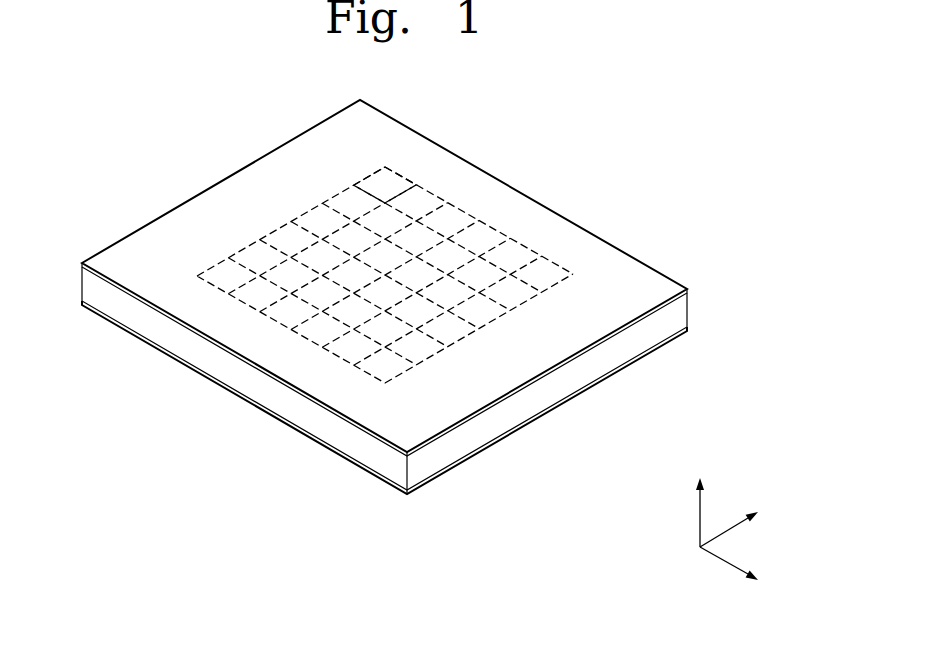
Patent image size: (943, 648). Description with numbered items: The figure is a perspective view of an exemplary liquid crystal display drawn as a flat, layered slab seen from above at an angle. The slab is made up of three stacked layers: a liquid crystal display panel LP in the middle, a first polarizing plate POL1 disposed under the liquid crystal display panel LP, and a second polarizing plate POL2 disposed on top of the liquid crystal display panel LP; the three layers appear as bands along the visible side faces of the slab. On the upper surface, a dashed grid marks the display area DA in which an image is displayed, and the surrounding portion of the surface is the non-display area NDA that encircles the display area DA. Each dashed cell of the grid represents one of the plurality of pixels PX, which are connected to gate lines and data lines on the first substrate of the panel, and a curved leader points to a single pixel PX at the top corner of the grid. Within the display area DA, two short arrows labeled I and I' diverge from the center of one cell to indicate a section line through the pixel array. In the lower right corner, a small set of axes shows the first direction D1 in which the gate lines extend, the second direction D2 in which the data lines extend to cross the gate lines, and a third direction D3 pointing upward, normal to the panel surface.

The pixel PX is at (389, 182).
The display area DA is at (570, 277).
The non-display area NDA is at (527, 198).
The second polarizing plate POL2 is at (688, 292).
The liquid crystal display panel LP is at (677, 317).
The first polarizing plate POL1 is at (688, 328).
The section line I is at (358, 305).
The section line I' is at (413, 305).
The first direction D1 is at (743, 577).
The second direction D2 is at (743, 519).
The third direction D3 is at (700, 500).